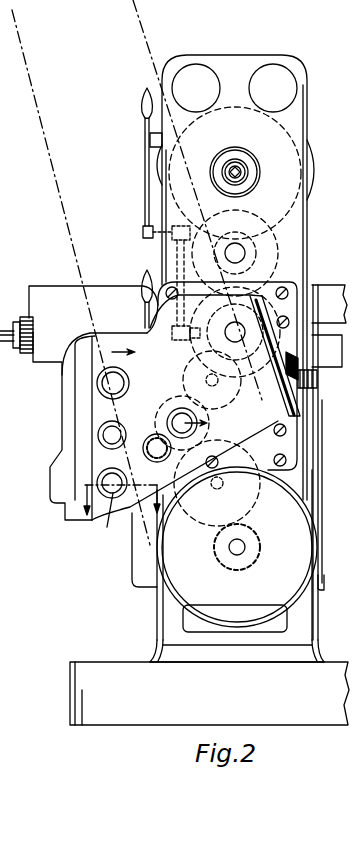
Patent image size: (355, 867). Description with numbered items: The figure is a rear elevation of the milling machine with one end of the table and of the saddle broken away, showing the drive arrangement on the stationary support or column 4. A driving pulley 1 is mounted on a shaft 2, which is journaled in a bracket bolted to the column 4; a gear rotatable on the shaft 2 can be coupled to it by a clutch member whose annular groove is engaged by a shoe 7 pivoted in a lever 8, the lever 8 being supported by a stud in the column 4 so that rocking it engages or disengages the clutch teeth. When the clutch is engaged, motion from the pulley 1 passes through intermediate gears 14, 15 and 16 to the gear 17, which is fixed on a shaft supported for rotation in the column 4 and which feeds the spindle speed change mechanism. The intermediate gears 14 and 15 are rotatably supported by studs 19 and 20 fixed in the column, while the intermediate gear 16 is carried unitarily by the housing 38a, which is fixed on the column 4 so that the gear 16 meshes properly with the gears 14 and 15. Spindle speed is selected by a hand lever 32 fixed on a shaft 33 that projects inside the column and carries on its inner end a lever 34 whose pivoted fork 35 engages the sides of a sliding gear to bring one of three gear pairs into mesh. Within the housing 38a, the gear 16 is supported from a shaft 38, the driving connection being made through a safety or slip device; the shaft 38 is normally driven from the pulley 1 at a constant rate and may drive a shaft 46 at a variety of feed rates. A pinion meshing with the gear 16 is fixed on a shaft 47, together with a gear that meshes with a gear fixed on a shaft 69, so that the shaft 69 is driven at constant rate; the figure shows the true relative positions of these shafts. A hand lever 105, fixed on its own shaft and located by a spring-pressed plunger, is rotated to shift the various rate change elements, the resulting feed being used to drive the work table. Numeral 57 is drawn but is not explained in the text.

The driving pulley 1 is at (318, 540).
The shaft 2 is at (246, 546).
The column 4 is at (309, 238).
The shoe 7 is at (120, 490).
The lever 8 is at (120, 345).
The intermediate gear 14 is at (198, 520).
The intermediate gear 15 is at (246, 389).
The intermediate gear 16 is at (218, 407).
The gear 17 is at (229, 332).
The stud 19 is at (222, 488).
The stud 20 is at (212, 380).
The hand lever 32 is at (143, 165).
The shaft 33 is at (143, 233).
The lever 34 is at (177, 262).
The pivoted fork 35 is at (188, 338).
The shaft 38 is at (180, 414).
The housing 38a is at (62, 418).
The shaft 46 is at (119, 382).
The shaft 47 is at (155, 447).
The bearing 57 is at (105, 437).
The shaft 69 is at (109, 518).
The hand lever 105 is at (300, 370).